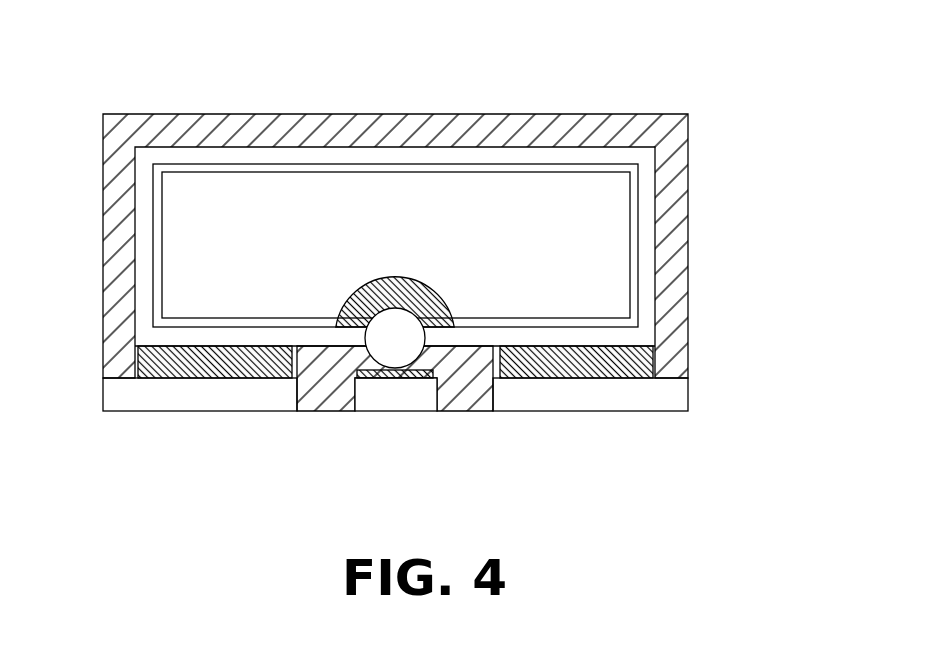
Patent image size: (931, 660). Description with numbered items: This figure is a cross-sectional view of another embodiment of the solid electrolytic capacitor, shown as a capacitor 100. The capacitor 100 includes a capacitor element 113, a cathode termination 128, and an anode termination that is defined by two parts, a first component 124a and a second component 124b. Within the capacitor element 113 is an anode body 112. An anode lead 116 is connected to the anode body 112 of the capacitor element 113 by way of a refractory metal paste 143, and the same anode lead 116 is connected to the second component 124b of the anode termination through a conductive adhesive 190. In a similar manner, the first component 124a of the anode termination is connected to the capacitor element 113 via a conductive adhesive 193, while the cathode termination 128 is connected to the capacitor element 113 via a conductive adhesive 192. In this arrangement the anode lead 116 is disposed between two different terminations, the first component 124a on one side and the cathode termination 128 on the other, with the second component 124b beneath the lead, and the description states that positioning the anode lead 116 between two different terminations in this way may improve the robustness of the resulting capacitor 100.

The capacitor 100 is at (748, 117).
The anode body 112 is at (388, 222).
The capacitor element 113 is at (525, 208).
The anode lead 116 is at (384, 353).
The first component 124a is at (142, 403).
The second component 124b is at (397, 403).
The cathode termination 128 is at (628, 400).
The refractory metal paste 143 is at (343, 302).
The conductive adhesive 190 is at (422, 380).
The conductive adhesive 192 is at (572, 358).
The conductive adhesive 193 is at (208, 360).